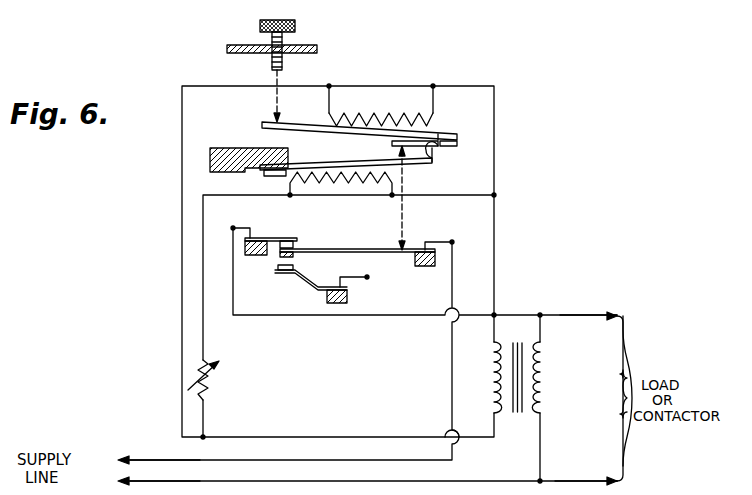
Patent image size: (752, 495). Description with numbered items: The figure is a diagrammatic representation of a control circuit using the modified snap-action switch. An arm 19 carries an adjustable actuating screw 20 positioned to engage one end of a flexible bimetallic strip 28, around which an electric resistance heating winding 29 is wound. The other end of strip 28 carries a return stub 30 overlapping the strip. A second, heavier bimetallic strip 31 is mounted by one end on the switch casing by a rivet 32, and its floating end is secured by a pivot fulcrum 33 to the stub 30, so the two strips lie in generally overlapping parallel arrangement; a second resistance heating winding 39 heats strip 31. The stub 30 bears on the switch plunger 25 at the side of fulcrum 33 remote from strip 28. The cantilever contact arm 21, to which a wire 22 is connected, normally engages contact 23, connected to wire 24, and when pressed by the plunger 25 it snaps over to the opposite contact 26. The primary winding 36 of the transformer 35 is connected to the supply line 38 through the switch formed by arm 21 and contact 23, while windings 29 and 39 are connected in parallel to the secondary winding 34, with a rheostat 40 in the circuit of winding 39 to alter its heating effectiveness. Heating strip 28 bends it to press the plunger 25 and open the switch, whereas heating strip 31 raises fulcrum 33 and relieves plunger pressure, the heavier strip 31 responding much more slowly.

The arm 19 is at (262, 47).
The screw 20 is at (272, 60).
The contact arm 21 is at (346, 248).
The wire 22 is at (434, 244).
The contact 23 is at (306, 234).
The wire 24 is at (254, 238).
The plunger 25 is at (398, 223).
The opposite contact 26 is at (276, 271).
The bimetallic strip 28 is at (272, 128).
The heating resistance winding 29 is at (398, 114).
The return stub 30 is at (440, 143).
The second bimetallic strip 31 is at (338, 158).
The rivet 32 is at (268, 175).
The pivot fulcrum 33 is at (432, 156).
The secondary winding 34 is at (492, 387).
The transformer 35 is at (518, 416).
The primary winding 36 is at (546, 386).
The supply line 38 is at (144, 481).
The resistance heating winding 39 is at (374, 186).
The rheostat 40 is at (211, 385).